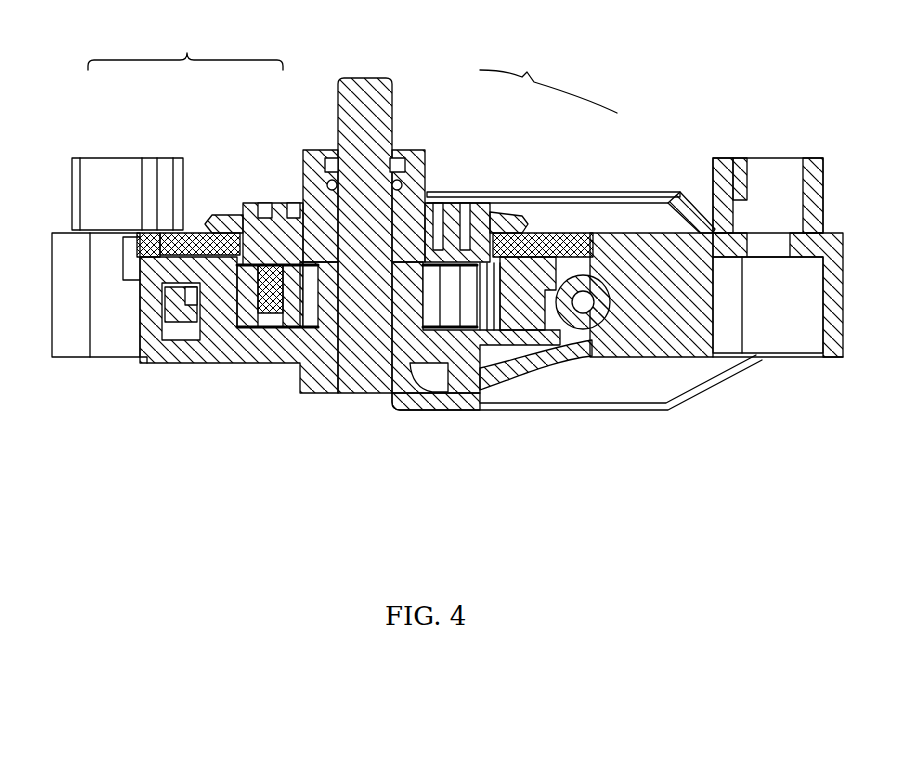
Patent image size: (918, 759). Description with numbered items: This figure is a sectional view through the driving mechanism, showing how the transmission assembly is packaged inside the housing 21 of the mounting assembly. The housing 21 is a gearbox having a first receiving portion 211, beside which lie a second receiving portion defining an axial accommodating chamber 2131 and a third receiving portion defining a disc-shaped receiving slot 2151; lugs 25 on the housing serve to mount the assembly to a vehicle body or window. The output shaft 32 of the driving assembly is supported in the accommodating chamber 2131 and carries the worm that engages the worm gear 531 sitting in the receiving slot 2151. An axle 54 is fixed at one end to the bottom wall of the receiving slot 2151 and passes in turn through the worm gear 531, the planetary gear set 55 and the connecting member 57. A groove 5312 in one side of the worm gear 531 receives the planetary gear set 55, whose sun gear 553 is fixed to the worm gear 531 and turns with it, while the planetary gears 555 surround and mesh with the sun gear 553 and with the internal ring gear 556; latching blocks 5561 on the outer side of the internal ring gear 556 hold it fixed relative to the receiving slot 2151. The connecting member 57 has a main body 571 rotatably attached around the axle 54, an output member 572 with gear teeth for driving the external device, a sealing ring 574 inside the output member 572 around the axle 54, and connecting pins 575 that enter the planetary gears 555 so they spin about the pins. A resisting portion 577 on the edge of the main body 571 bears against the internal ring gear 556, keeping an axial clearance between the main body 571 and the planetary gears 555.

The housing 21 is at (678, 320).
The first receiving portion 211 is at (665, 192).
The accommodating chamber 2131 is at (603, 357).
The receiving slot 2151 is at (155, 363).
The lugs 25 is at (63, 323).
The output shaft 32 is at (583, 315).
The axle 54 is at (375, 353).
The planetary gear set 55 is at (185, 42).
The sun gear 553 is at (320, 355).
The worm gear 531 is at (180, 345).
The groove 5312 is at (210, 338).
The planetary gears 555 is at (230, 235).
The internal ring gear 556 is at (188, 235).
The latching blocks 5561 is at (155, 243).
The connecting member 57 is at (548, 77).
The main body 571 is at (445, 200).
The output member 572 is at (405, 153).
The sealing ring 574 is at (432, 200).
The connecting pins 575 is at (272, 222).
The resisting portion 577 is at (530, 220).